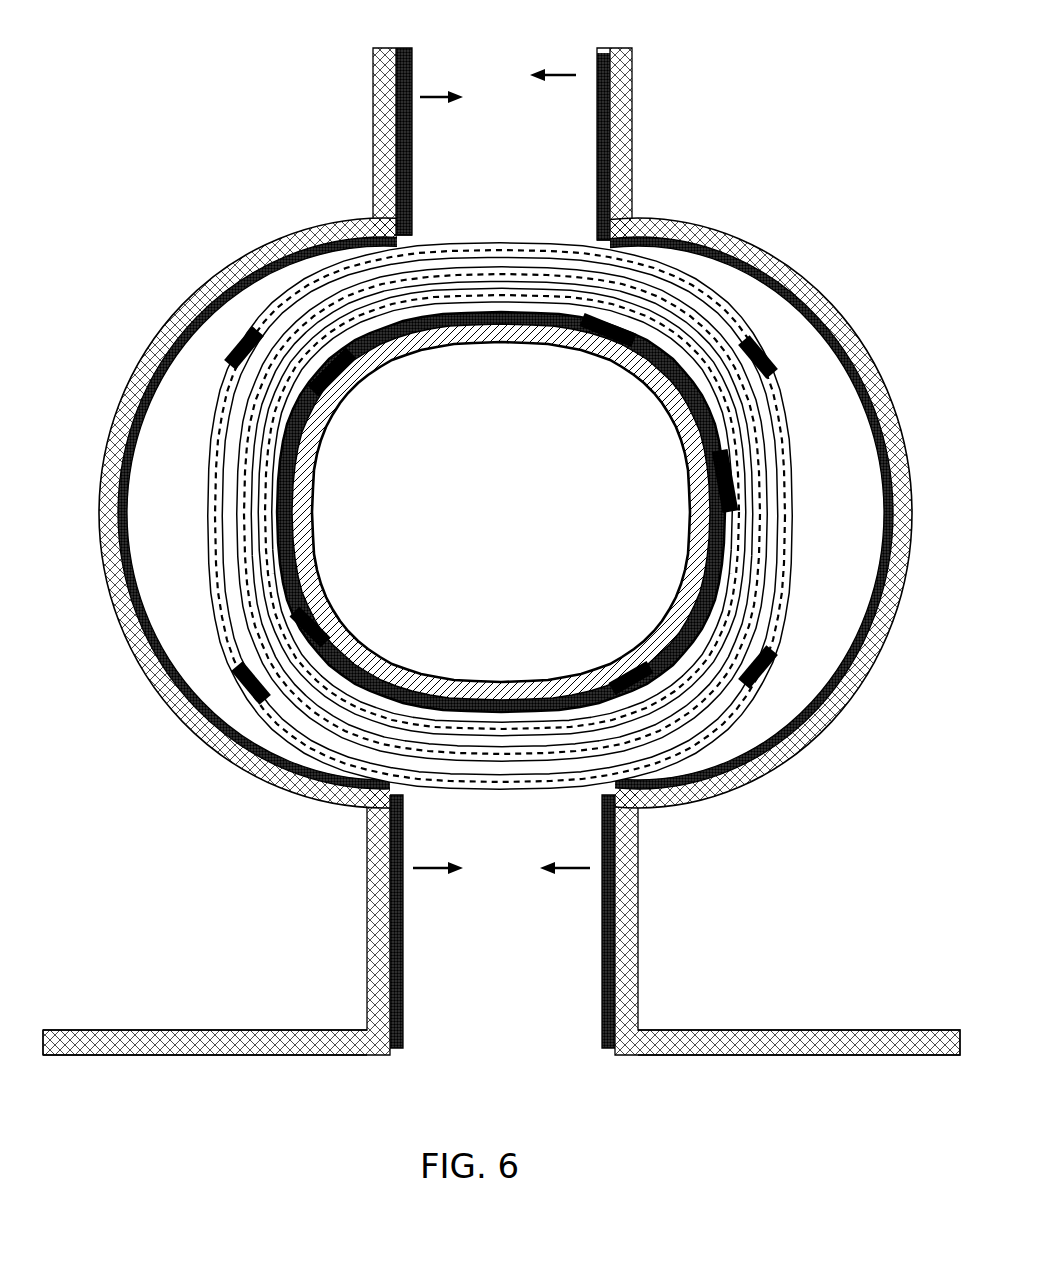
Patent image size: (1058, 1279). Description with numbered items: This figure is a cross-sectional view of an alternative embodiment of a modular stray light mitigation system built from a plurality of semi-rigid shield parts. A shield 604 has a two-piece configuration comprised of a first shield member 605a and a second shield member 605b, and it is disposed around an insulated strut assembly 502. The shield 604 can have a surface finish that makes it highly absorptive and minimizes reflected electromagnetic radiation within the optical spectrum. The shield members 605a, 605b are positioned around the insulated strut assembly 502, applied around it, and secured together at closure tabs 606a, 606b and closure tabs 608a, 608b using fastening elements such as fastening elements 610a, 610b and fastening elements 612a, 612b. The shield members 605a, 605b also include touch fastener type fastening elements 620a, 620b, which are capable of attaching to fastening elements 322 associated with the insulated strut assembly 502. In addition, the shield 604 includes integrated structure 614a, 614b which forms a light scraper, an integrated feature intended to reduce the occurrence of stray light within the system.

The fastening elements 322 is at (233, 673).
The insulated strut assembly 502 is at (600, 546).
The shield 604 is at (501, 551).
The first shield member 605a is at (356, 551).
The second shield member 605b is at (662, 551).
The closure tab 606a is at (382, 143).
The closure tab 606b is at (611, 144).
The closure tab 608a is at (255, 922).
The closure tab 608b is at (743, 922).
The fastening element 610a is at (412, 178).
The fastening element 610b is at (598, 163).
The fastening element 612a is at (403, 988).
The fastening element 612b is at (602, 940).
The integrated structure 614a is at (168, 1008).
The integrated structure 614b is at (778, 998).
The touch fastener type fastening element 620a is at (129, 478).
The touch fastener type fastening element 620b is at (887, 472).